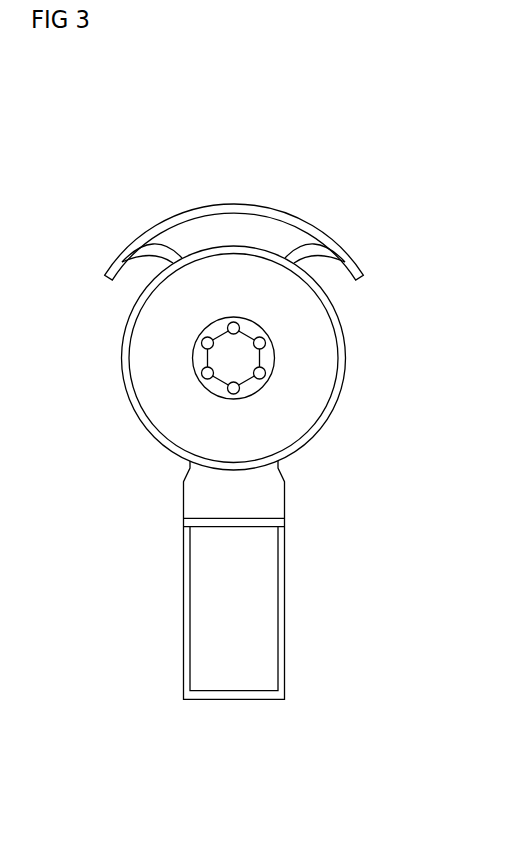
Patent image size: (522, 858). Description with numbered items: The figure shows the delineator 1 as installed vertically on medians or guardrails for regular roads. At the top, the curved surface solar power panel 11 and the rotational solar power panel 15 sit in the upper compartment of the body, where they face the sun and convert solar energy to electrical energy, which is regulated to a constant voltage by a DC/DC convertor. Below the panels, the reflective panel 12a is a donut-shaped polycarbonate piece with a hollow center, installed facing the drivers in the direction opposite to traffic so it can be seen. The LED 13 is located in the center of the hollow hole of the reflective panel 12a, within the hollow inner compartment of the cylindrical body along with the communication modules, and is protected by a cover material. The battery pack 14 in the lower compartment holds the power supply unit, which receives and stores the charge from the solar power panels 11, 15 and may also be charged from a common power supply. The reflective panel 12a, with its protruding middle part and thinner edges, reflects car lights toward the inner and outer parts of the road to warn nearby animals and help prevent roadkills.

The delineator 1 is at (86, 166).
The curved surface solar power panel 11 is at (297, 205).
The rotational solar power panel 15 is at (223, 223).
The reflective panel 12a is at (322, 343).
The LED 13 is at (243, 393).
The battery pack 14 is at (279, 622).